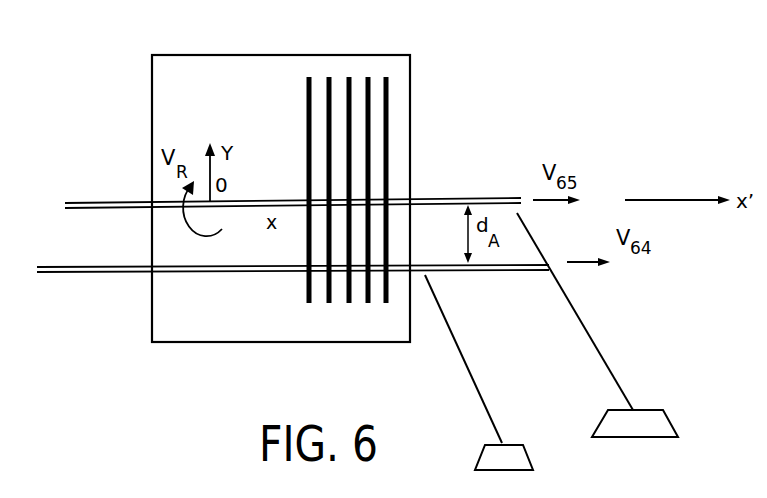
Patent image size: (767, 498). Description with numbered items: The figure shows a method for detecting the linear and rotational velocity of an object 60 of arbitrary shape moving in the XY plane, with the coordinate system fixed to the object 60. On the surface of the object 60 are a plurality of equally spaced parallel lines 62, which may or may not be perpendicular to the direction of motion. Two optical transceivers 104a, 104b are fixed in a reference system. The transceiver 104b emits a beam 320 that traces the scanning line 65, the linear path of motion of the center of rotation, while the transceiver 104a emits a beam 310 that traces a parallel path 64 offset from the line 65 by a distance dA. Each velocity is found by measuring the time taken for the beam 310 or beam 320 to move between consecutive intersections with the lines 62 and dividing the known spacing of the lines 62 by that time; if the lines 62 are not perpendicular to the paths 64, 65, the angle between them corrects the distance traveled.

The object 60 is at (340, 55).
The equally spaced parallel lines 62 is at (306, 287).
The parallel path 64 is at (87, 267).
The scanning line 65 is at (95, 203).
The beam 310 is at (467, 365).
The beam 320 is at (595, 338).
The optical transceiver 104a is at (510, 444).
The optical transceiver 104b is at (670, 423).